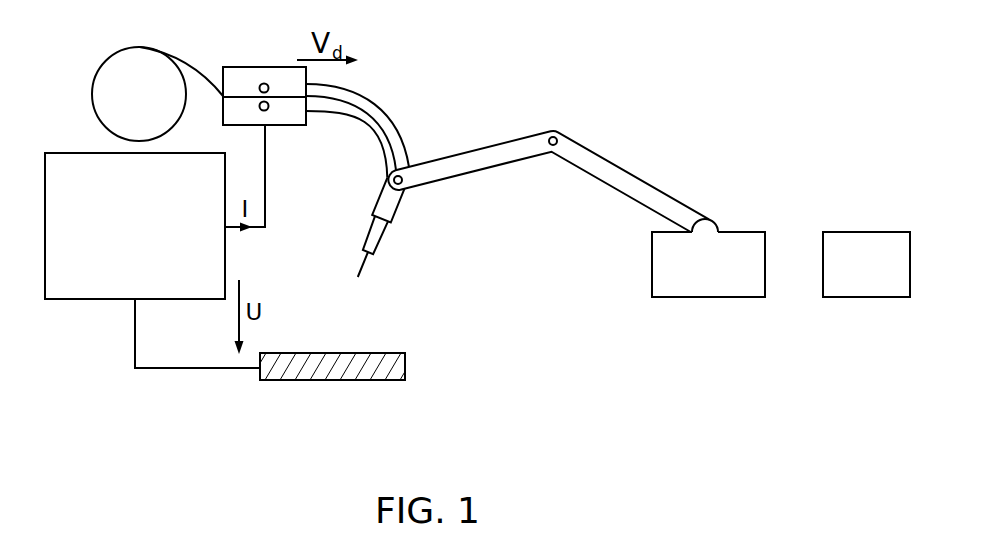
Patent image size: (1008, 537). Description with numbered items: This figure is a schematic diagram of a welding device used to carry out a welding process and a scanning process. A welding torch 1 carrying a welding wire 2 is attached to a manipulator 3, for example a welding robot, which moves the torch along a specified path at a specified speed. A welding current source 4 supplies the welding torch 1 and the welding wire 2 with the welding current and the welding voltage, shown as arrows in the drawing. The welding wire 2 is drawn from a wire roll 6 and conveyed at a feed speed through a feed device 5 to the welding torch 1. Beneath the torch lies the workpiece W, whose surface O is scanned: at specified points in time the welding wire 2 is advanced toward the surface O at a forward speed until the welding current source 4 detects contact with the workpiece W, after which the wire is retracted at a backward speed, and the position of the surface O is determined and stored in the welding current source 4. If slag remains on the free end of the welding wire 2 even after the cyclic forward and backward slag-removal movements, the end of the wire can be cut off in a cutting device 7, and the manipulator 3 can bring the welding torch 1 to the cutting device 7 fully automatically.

The welding torch 1 is at (507, 188).
The welding wire 2 is at (363, 270).
The manipulator 3 is at (742, 212).
The welding current source 4 is at (80, 173).
The feed device 5 is at (277, 65).
The wire roll 6 is at (142, 67).
The cutting device 7 is at (870, 250).
The workpiece W is at (375, 381).
The surface O is at (329, 336).